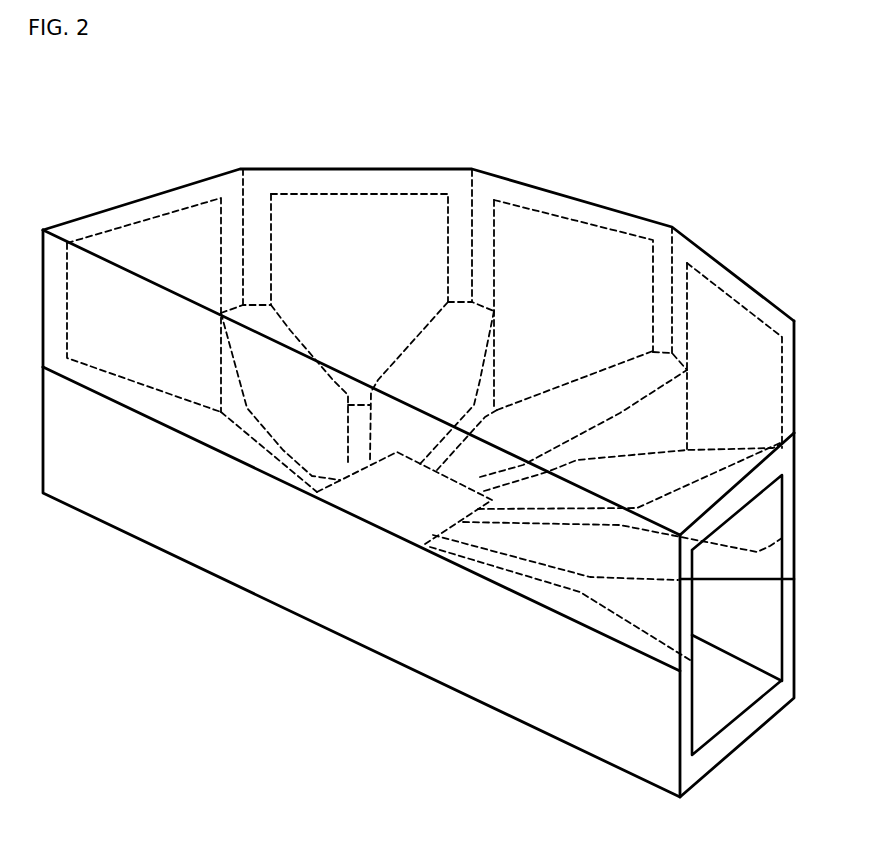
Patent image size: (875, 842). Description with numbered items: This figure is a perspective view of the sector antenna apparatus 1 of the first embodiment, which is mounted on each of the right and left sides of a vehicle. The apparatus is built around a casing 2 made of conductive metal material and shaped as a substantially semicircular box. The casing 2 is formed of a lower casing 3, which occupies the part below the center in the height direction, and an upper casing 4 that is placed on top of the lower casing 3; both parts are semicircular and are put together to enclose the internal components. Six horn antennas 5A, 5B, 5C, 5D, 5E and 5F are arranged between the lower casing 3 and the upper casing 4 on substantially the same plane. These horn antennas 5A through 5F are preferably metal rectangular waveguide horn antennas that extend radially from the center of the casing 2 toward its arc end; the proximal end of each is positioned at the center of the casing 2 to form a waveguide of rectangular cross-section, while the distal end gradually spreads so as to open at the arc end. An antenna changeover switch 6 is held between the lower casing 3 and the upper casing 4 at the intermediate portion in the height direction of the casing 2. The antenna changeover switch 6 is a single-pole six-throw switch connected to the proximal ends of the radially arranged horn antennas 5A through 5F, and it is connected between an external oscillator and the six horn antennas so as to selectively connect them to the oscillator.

The sector antenna apparatus 1 is at (103, 189).
The casing 2 is at (573, 200).
The lower casing 3 is at (95, 498).
The upper casing 4 is at (263, 183).
The horn antenna 5A is at (217, 233).
The horn antenna 5B is at (443, 213).
The horn antenna 5C is at (653, 265).
The horn antenna 5D is at (783, 372).
The horn antenna 5E is at (784, 538).
The horn antenna 5F is at (728, 700).
The antenna changeover switch 6 is at (420, 548).